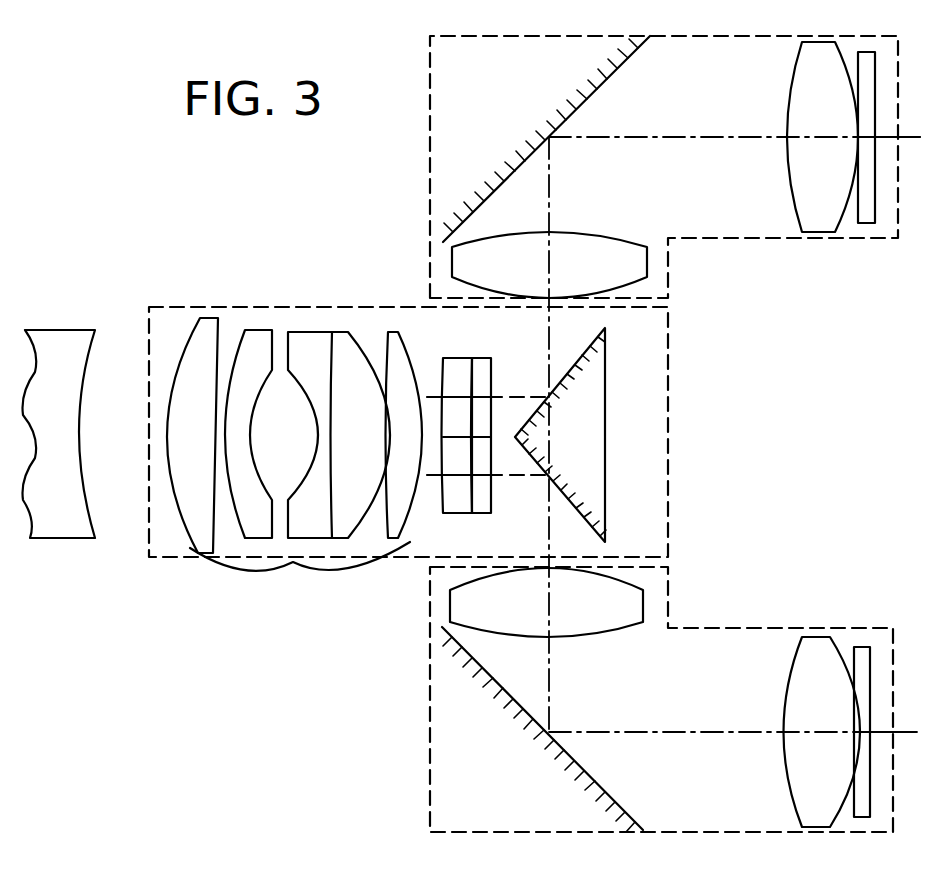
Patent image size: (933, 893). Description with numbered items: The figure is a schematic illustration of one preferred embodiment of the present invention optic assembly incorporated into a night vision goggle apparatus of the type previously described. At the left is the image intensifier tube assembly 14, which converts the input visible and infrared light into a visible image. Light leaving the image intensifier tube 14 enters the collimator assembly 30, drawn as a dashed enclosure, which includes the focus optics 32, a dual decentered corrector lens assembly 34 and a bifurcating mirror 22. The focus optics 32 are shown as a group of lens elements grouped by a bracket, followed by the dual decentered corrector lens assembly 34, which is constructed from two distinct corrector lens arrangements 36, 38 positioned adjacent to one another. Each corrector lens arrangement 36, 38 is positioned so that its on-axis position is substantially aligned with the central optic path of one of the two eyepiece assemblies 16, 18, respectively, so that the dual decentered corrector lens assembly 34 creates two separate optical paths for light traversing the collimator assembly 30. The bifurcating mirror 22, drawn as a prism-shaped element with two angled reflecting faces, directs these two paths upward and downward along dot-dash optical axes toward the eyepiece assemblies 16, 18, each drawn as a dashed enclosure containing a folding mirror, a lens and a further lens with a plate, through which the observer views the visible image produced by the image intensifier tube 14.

The image intensifier tube assembly 14 is at (76, 331).
The eyepiece assembly 16 is at (727, 240).
The eyepiece assembly 18 is at (758, 627).
The bifurcating mirror 22 is at (584, 451).
The collimator assembly 30 is at (294, 297).
The focus optics 32 is at (293, 562).
The dual decentered corrector lens assembly 34 is at (436, 469).
The corrector lens arrangement 36 is at (473, 513).
The corrector lens arrangement 38 is at (473, 358).